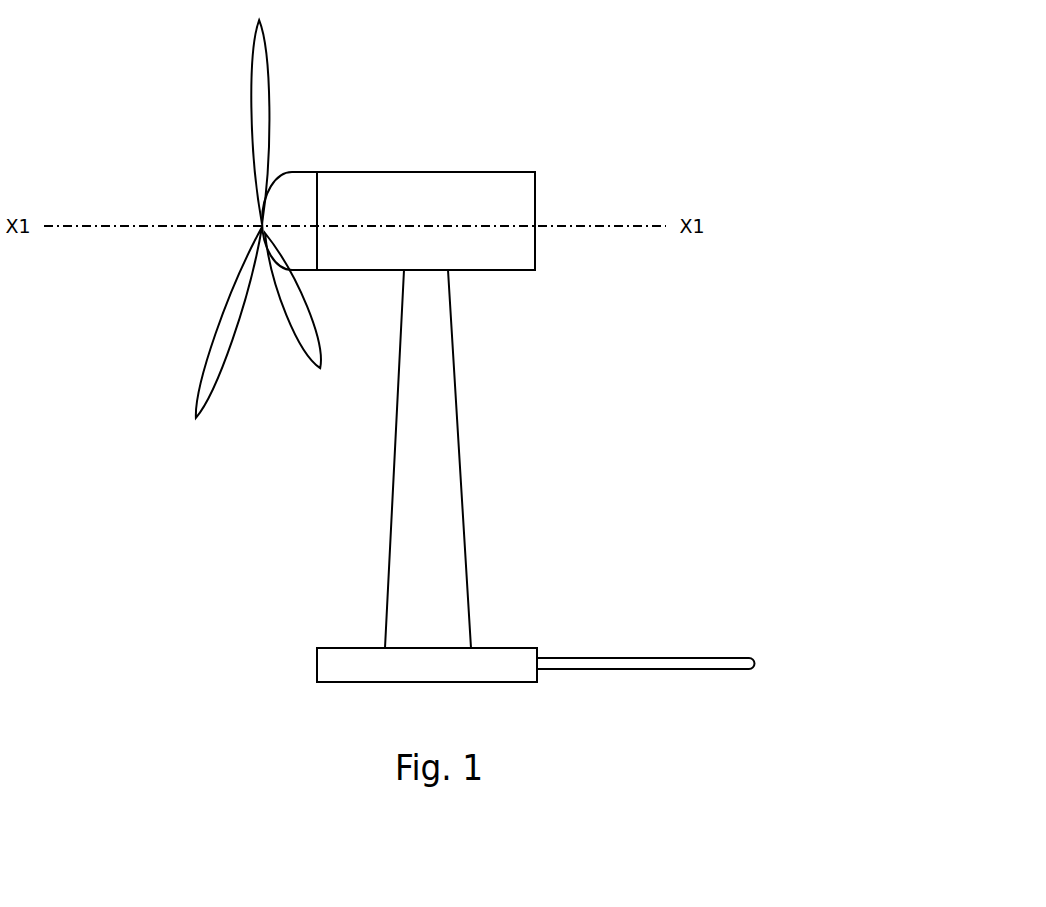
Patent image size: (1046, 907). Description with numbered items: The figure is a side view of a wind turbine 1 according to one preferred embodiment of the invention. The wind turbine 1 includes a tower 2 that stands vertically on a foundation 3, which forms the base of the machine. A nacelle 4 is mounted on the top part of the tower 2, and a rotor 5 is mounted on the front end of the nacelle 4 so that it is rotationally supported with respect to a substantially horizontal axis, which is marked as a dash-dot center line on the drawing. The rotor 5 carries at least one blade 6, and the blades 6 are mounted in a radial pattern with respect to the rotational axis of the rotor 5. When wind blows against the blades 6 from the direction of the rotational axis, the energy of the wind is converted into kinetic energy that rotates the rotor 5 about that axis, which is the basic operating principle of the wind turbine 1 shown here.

The wind turbine 1 is at (742, 128).
The tower 2 is at (460, 400).
The foundation 3 is at (350, 648).
The nacelle 4 is at (448, 171).
The rotor 5 is at (282, 238).
The blade 6 is at (252, 140).